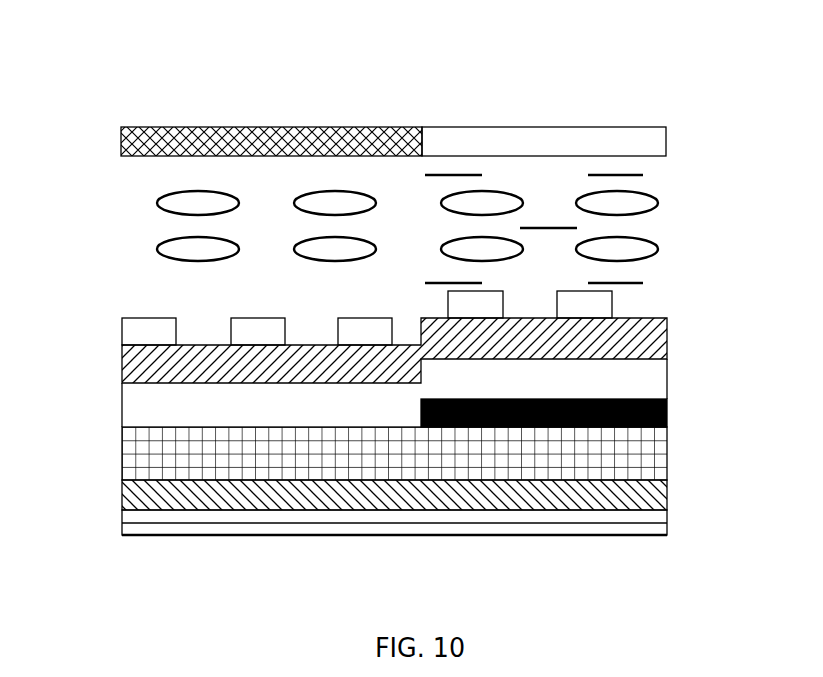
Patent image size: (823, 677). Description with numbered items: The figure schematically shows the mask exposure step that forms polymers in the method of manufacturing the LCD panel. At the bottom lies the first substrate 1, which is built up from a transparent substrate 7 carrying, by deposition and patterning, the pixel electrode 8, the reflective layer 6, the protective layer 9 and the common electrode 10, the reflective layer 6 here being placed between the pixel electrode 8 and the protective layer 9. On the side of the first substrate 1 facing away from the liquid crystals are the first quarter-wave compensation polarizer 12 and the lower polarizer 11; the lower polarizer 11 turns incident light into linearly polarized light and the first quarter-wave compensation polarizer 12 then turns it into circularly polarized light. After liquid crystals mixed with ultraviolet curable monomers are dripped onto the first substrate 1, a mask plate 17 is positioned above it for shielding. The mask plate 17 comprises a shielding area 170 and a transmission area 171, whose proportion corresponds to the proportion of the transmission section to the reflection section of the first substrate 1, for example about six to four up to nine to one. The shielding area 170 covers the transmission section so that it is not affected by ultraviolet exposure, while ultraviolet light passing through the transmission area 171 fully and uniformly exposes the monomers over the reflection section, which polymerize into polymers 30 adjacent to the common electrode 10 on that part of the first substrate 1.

The first substrate 1 is at (433, 416).
The reflective layer 6 is at (667, 415).
The transparent substrate 7 is at (122, 453).
The pixel electrode 8 is at (122, 403).
The protective layer 9 is at (667, 341).
The common electrode 10 is at (122, 330).
The lower polarizer 11 is at (122, 522).
The first λ/4 compensation polarizer 12 is at (667, 498).
The mask plate 17 is at (396, 87).
The polymers 30 is at (622, 283).
The shielding area 170 is at (121, 142).
The transmission area 171 is at (666, 142).